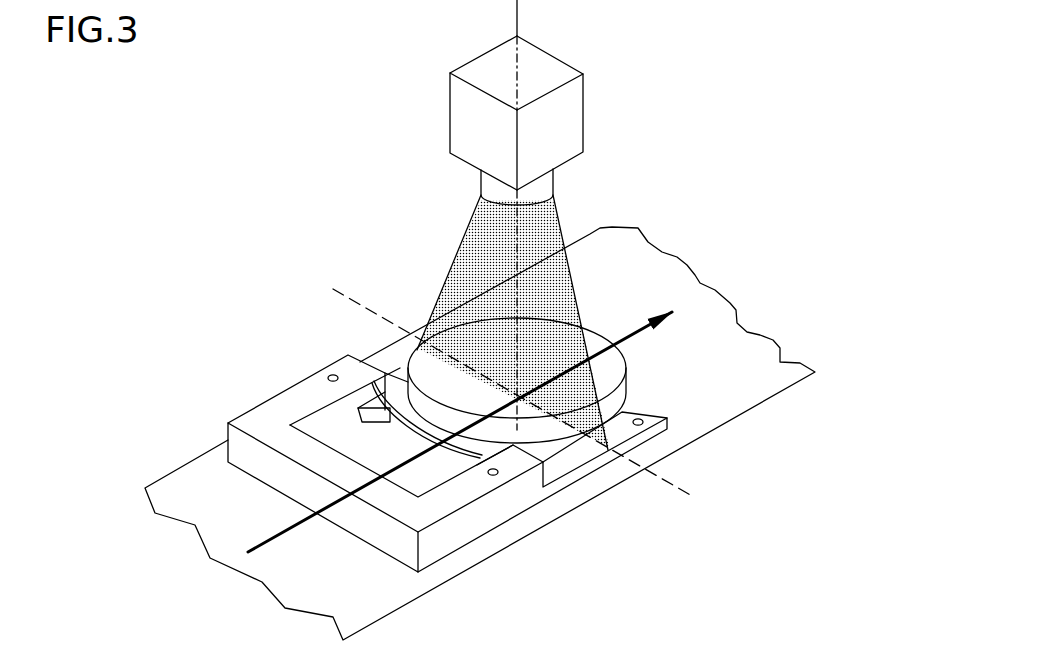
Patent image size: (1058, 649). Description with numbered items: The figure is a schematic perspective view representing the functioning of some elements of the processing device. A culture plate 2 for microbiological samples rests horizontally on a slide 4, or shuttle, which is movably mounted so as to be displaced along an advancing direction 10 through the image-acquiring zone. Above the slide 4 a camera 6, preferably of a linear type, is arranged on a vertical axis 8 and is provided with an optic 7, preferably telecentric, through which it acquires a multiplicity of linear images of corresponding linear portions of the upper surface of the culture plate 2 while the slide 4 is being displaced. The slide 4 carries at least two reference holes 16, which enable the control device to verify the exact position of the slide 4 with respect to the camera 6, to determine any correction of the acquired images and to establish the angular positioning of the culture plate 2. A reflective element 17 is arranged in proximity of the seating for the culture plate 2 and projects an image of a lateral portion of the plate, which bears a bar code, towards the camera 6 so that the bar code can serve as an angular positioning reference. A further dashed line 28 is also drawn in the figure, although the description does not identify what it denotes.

The culture plate 2 is at (488, 357).
The slide 4 is at (262, 397).
The camera 6 is at (578, 104).
The optic 7 is at (481, 193).
The vertical axis 8 is at (517, 15).
The advancing direction 10 is at (637, 323).
The reference holes 16 is at (333, 375).
The reflective element 17 is at (387, 377).
The tilt axis 28 is at (657, 483).